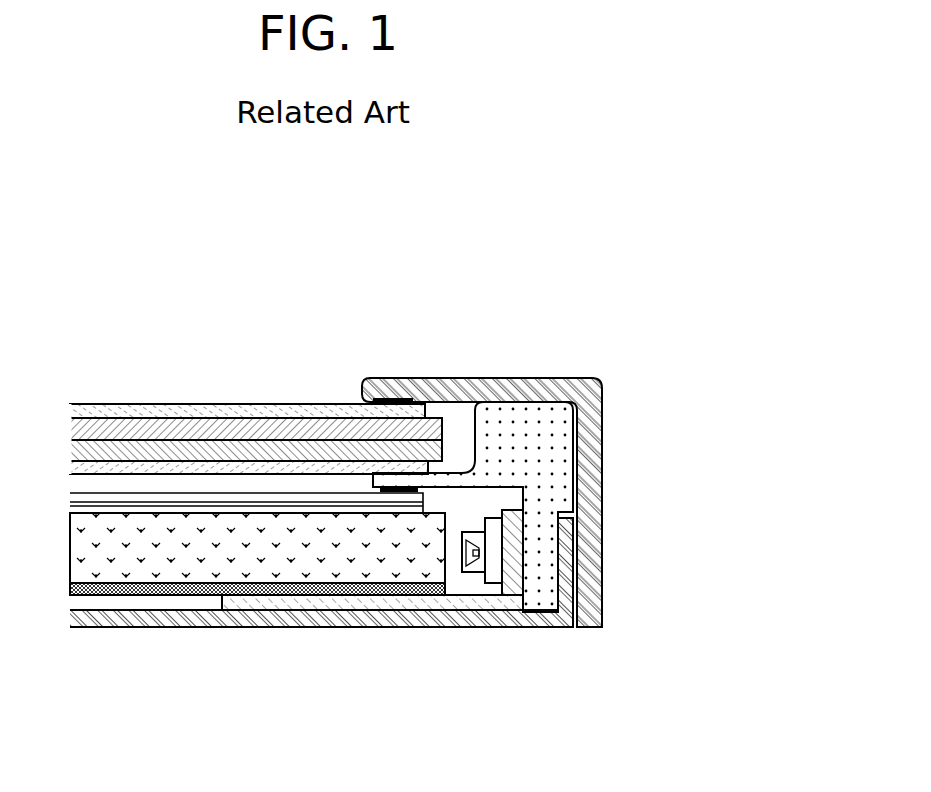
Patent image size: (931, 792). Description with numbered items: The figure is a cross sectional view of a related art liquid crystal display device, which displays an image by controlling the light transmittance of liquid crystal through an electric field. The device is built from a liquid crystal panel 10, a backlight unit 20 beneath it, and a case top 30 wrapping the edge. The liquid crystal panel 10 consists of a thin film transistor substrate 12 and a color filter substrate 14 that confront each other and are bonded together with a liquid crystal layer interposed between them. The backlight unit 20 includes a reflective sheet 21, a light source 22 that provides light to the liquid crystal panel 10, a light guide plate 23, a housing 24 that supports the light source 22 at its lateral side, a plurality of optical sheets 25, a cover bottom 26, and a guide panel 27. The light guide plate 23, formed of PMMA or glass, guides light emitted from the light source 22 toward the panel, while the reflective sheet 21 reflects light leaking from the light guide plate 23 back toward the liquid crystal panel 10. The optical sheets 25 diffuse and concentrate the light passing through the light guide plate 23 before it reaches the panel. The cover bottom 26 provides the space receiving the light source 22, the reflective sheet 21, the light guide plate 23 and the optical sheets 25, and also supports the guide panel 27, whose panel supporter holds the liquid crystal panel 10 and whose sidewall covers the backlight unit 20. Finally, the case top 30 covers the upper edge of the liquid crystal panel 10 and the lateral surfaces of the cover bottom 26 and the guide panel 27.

The liquid crystal panel 10 is at (256, 381).
The thin film transistor substrate 12 is at (272, 452).
The color filter substrate 14 is at (221, 429).
The backlight unit 20 is at (321, 576).
The reflective sheet 21 is at (192, 590).
The light source 22 is at (473, 611).
The light guide plate 23 is at (270, 555).
The housing 24 is at (332, 611).
The optical sheets 25 is at (132, 493).
The cover bottom 26 is at (386, 621).
The guide panel 27 is at (539, 594).
The case top 30 is at (468, 393).